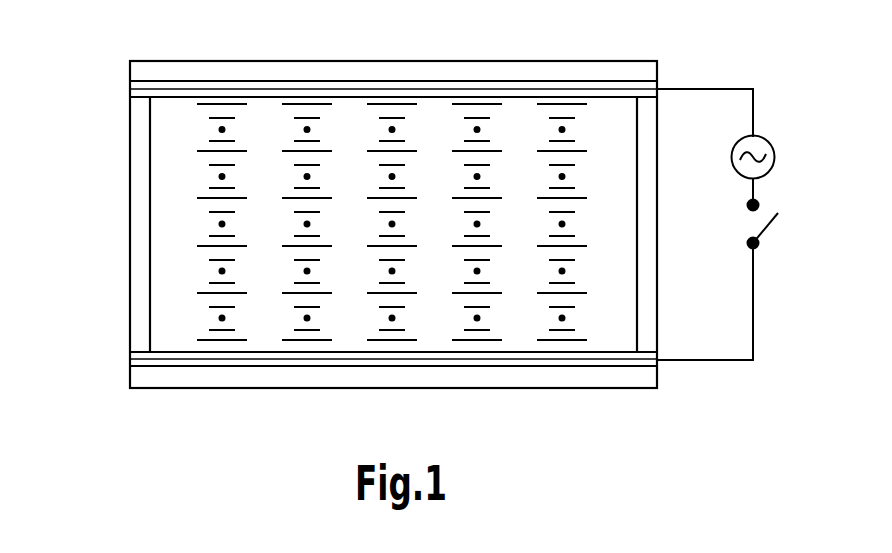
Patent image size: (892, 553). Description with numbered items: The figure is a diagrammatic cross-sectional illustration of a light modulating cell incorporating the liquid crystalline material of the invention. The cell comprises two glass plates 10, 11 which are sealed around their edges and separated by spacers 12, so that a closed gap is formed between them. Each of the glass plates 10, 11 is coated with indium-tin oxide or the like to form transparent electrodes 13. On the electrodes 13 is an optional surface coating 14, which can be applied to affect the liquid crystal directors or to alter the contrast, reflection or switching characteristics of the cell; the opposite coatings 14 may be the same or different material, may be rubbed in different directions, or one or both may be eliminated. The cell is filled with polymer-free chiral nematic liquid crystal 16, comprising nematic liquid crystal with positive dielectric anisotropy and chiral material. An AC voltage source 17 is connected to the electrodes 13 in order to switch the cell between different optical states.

The glass plate 10 is at (170, 70).
The glass plate 11 is at (322, 378).
The spacers 12 is at (140, 193).
The transparent electrodes 13 is at (145, 83).
The surface coating 14 is at (145, 93).
The chiral nematic liquid crystal 16 is at (612, 293).
The AC voltage source 17 is at (762, 145).